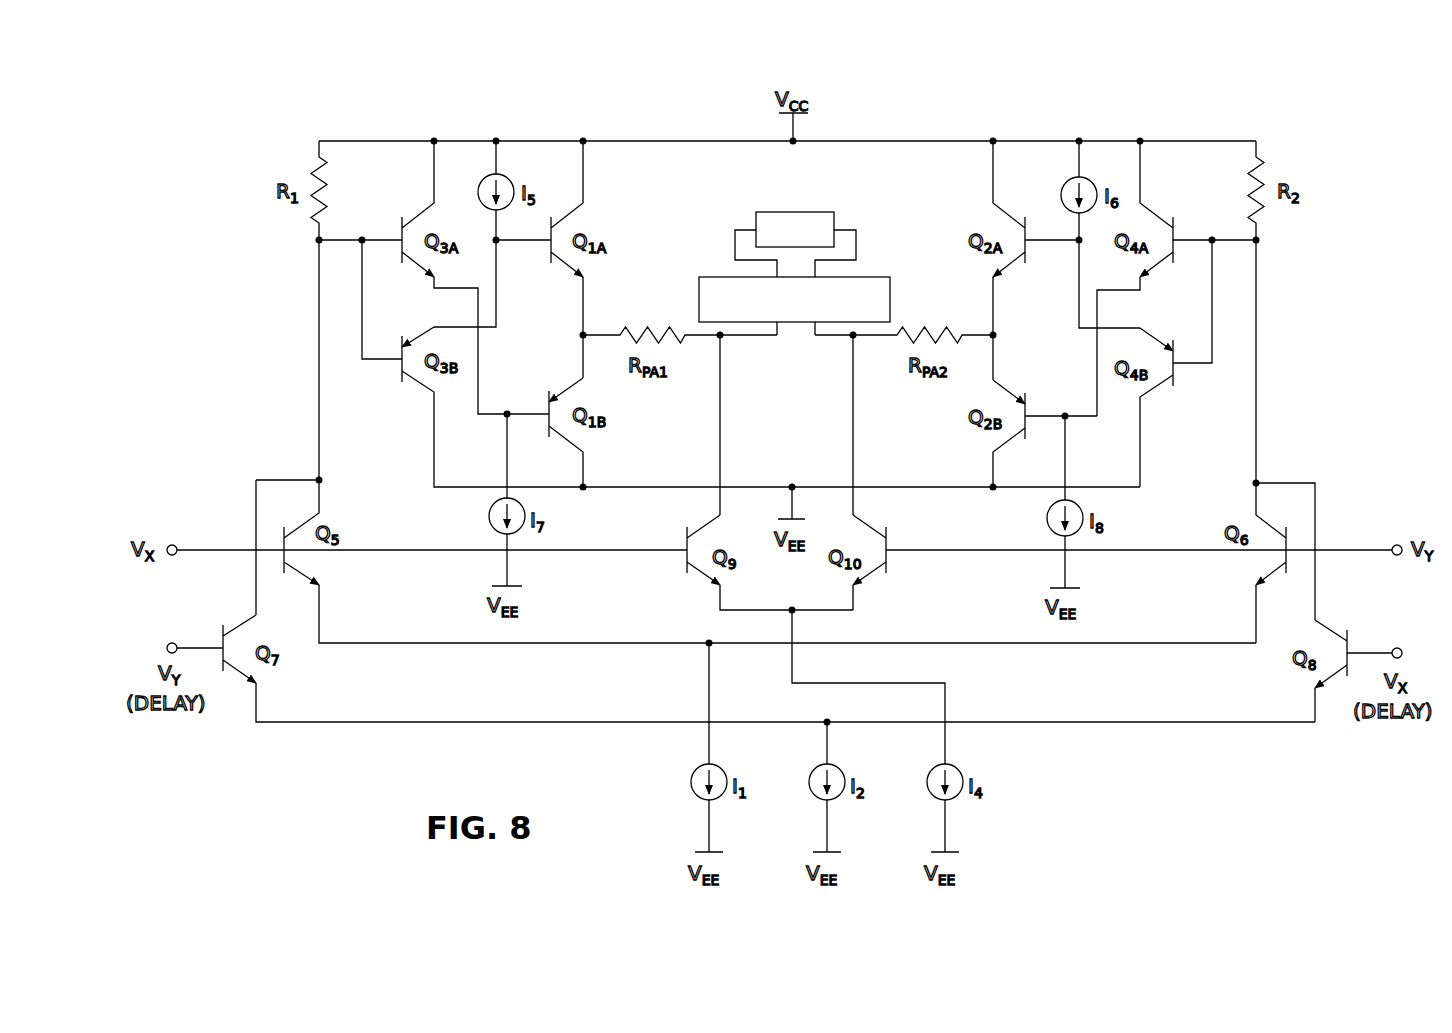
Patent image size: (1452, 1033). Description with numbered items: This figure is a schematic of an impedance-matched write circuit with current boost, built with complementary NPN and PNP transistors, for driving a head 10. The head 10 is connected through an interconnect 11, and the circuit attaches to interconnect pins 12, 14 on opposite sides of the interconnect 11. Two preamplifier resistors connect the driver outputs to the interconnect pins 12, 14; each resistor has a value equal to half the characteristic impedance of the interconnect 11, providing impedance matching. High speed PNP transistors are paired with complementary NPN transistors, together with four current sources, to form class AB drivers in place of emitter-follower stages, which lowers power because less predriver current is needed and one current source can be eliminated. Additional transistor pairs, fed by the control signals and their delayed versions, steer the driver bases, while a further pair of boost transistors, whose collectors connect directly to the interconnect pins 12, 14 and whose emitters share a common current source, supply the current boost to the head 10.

The head 10 is at (796, 212).
The interconnect 11 is at (715, 277).
The interconnect pin 12 is at (722, 338).
The interconnect pin 14 is at (851, 340).